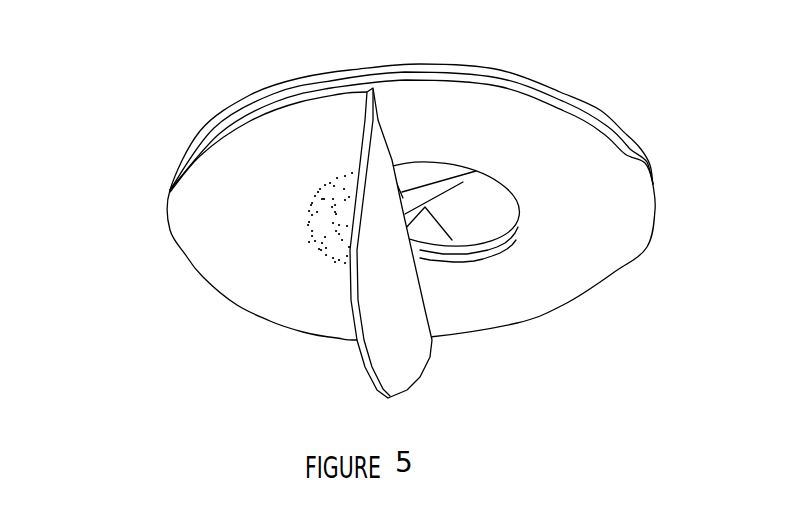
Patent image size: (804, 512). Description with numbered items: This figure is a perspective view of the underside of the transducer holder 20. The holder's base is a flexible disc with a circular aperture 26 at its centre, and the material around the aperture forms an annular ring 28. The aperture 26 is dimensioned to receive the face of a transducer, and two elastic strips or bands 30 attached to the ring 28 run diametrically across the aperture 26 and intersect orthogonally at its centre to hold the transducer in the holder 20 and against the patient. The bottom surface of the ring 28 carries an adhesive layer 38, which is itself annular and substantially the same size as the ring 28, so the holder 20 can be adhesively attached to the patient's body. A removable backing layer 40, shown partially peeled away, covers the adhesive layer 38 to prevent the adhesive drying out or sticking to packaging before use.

The transducer holder 20 is at (168, 116).
The circular aperture 26 is at (475, 217).
The annular ring 28 is at (580, 103).
The elastic strips or bands 30 is at (427, 228).
The adhesive layer 38 is at (627, 232).
The removable backing layer 40 is at (400, 376).